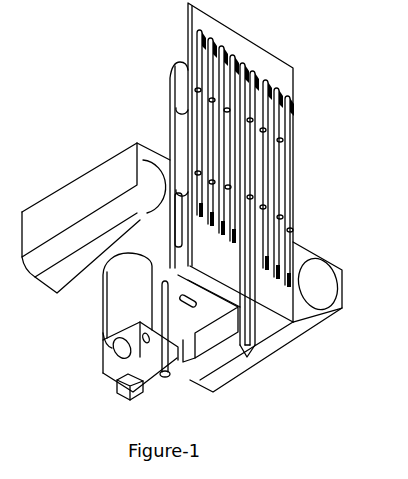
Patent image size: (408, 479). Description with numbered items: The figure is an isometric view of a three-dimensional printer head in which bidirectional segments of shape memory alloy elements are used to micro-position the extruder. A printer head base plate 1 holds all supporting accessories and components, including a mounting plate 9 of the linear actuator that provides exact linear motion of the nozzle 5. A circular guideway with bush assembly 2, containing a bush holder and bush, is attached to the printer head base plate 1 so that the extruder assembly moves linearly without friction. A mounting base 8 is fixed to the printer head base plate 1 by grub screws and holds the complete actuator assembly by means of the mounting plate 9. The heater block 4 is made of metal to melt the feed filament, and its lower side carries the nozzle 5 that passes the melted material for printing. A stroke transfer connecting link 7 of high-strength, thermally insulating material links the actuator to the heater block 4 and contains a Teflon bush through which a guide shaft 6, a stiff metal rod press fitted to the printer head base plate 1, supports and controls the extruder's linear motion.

The printer head base plate 1 is at (82, 188).
The circular guideway with bush assembly 2 is at (100, 305).
The heater block 4 is at (108, 355).
The nozzle 5 is at (117, 393).
The guide shaft 6 is at (168, 378).
The stroke transfer connecting link 7 is at (220, 356).
The mounting base 8 is at (175, 93).
The mounting plate 9 is at (273, 65).